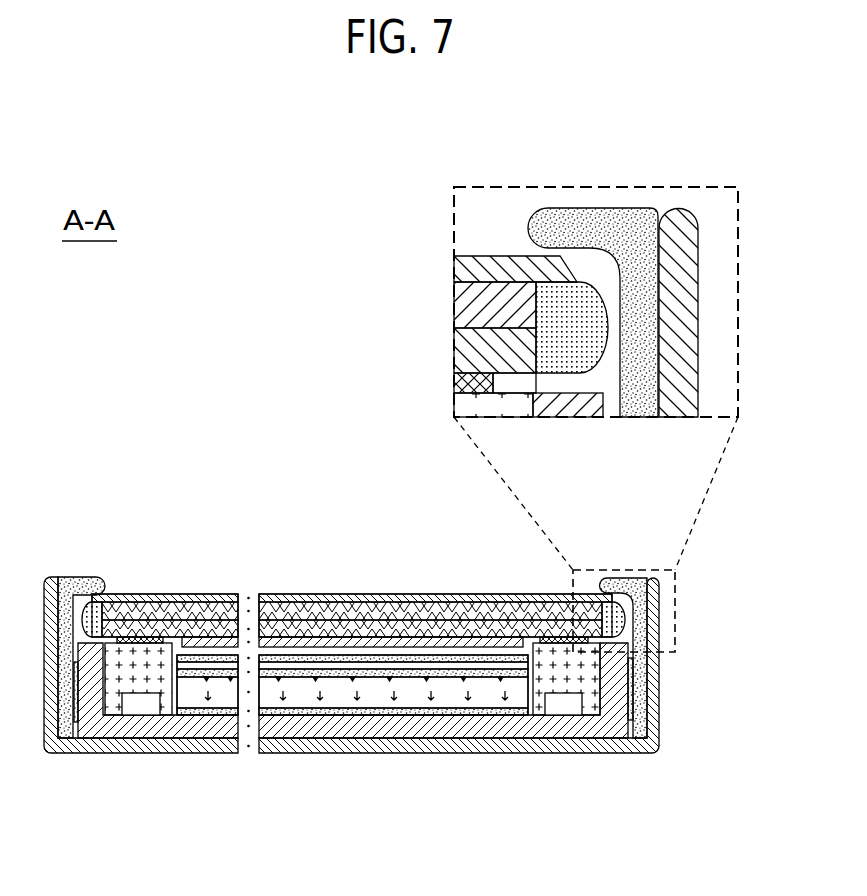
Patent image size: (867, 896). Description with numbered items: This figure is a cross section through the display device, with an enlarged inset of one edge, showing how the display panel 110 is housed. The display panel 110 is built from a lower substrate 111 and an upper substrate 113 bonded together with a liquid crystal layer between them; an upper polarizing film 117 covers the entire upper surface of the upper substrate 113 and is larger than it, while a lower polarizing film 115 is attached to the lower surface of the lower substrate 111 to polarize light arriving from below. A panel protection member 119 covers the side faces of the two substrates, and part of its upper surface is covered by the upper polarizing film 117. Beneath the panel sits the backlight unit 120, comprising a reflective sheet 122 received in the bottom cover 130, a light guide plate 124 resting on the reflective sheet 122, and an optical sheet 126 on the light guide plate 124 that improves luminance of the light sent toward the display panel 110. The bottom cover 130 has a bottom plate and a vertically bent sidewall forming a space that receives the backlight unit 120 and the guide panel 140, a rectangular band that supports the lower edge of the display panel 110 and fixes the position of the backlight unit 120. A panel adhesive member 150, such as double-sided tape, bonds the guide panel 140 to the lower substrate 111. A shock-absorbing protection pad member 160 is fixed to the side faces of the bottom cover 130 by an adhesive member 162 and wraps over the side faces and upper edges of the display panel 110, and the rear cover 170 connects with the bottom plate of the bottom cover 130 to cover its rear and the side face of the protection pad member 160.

The display panel 110 is at (307, 537).
The lower substrate 111 is at (215, 628).
The upper substrate 113 is at (271, 612).
The lower polarizing film 115 is at (313, 642).
The upper polarizing film 117 is at (163, 600).
The panel protection member 119 is at (100, 612).
The backlight unit 120 is at (497, 816).
The reflective sheet 122 is at (402, 712).
The light guide plate 124 is at (447, 690).
The optical sheet 126 is at (503, 658).
The bottom cover 130 is at (302, 730).
The guide panel 140 is at (138, 685).
The panel adhesive member 150 is at (162, 641).
The protection pad member 160 is at (643, 668).
The adhesive member 162 is at (632, 702).
The rear cover 170 is at (653, 747).